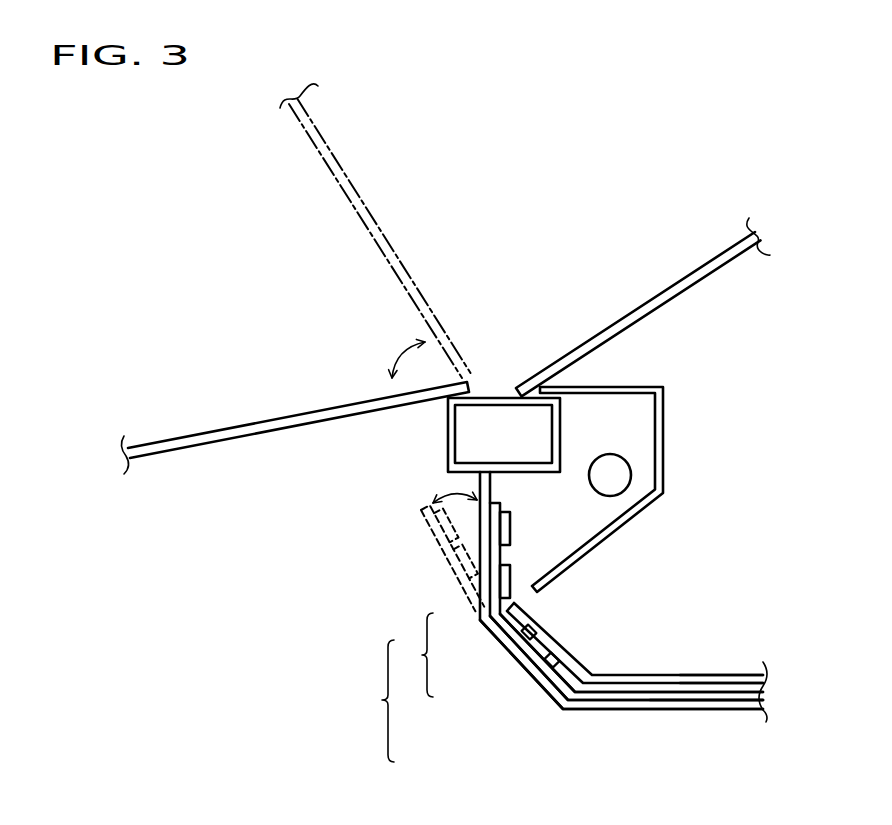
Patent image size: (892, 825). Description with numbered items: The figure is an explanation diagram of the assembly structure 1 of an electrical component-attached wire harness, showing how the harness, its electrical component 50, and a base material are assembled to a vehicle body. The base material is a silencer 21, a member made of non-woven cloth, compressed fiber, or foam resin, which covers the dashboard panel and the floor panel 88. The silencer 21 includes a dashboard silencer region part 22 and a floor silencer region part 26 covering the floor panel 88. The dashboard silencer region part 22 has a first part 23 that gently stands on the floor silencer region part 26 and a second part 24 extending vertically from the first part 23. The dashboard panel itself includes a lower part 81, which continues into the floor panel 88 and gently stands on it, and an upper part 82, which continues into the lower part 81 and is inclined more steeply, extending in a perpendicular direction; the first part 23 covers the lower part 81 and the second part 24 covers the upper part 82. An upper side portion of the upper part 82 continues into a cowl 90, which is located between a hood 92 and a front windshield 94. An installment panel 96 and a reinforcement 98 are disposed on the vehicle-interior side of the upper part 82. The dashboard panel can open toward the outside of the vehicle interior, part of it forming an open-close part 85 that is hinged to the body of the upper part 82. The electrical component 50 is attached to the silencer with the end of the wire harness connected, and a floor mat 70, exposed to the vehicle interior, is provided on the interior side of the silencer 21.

The assembly structure 1 is at (277, 661).
The silencer 21 is at (374, 701).
The dashboard silencer region part 22 is at (414, 655).
The first part 23 is at (532, 650).
The second part 24 is at (515, 523).
The floor silencer region part 26 is at (607, 697).
The electrical component 50 is at (507, 530).
The floor mat 70 is at (692, 685).
The lower part 81 is at (567, 662).
The upper part 82 is at (480, 488).
The open-close part 85 is at (515, 560).
The floor panel 88 is at (676, 706).
The cowl 90 is at (495, 395).
The hood 92 is at (397, 258).
The front windshield 94 is at (680, 293).
The installment panel 96 is at (663, 440).
The reinforcement 98 is at (623, 475).